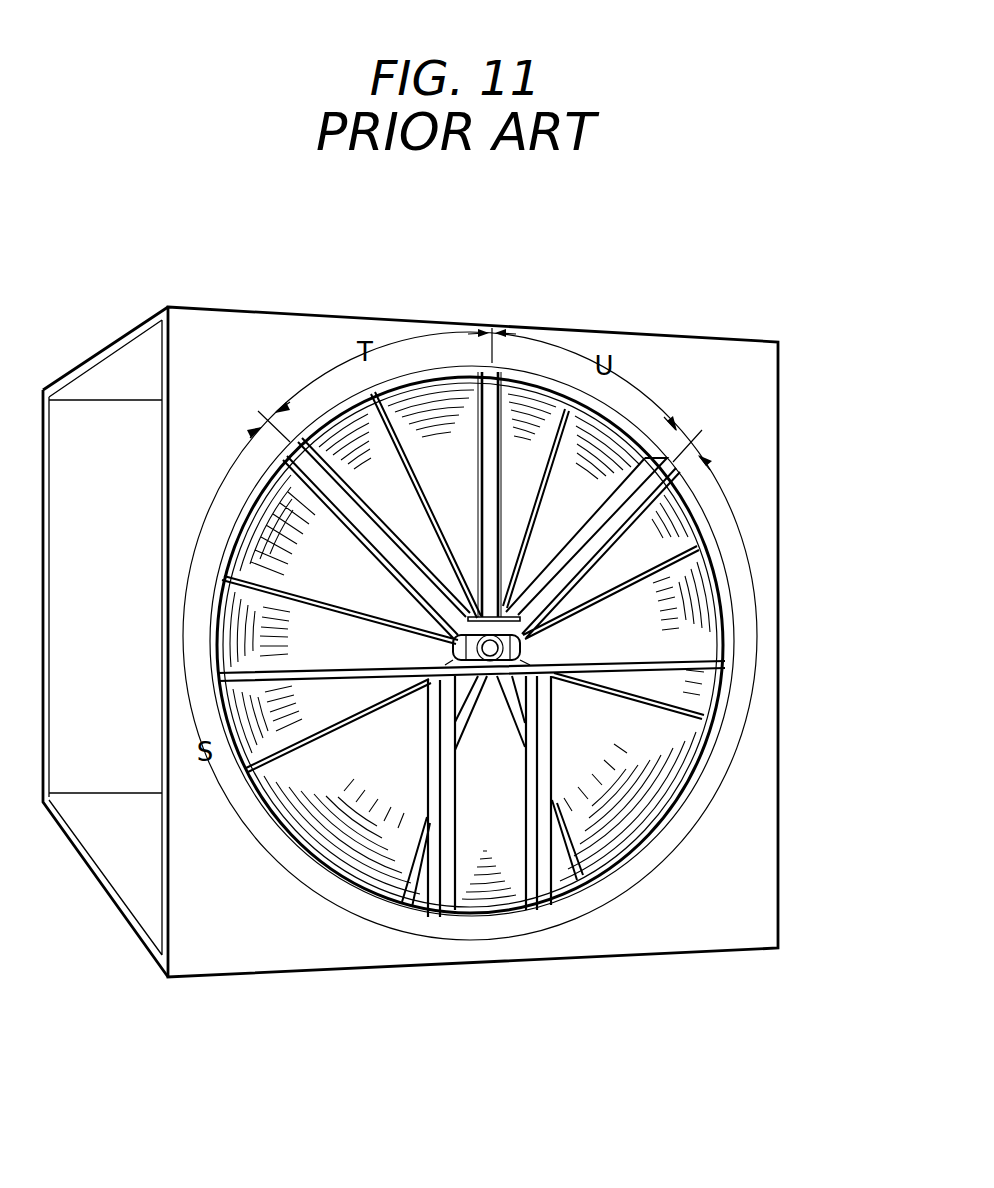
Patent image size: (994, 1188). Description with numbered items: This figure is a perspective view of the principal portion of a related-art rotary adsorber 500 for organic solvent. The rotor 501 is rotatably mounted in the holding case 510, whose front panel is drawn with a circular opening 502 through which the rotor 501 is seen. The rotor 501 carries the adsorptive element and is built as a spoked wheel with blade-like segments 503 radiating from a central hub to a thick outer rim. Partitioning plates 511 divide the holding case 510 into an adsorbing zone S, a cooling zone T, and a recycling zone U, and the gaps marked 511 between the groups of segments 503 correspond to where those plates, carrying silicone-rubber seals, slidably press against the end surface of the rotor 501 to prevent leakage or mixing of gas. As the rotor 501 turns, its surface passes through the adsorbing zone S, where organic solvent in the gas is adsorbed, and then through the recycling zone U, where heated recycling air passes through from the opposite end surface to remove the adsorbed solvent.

The rotary adsorber 500 is at (464, 642).
The rotor 501 is at (722, 613).
The circular opening in front panel 502 is at (627, 817).
The fan blade 503 is at (404, 446).
The holding case 510 is at (740, 848).
The partitioning plates 511 is at (493, 420).